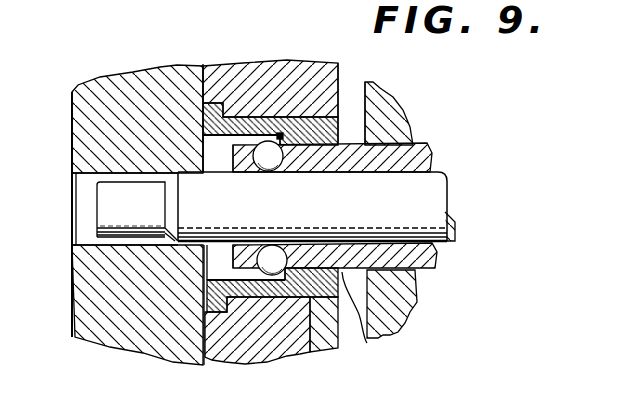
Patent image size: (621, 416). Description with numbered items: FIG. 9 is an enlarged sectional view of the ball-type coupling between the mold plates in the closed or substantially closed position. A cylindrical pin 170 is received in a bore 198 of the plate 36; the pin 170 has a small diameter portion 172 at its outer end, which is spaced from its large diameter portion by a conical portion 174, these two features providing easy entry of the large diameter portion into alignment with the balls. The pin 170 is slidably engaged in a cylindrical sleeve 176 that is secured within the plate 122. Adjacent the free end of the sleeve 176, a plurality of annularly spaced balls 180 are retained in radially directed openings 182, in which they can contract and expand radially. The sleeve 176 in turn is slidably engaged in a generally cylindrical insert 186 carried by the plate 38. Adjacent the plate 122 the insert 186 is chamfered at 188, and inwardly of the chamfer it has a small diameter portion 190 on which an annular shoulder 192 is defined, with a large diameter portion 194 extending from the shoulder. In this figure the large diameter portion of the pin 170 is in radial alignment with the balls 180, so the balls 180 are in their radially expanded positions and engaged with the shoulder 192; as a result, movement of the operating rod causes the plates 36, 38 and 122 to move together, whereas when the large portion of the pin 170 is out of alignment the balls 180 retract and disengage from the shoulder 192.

The plate 36 is at (155, 75).
The plate 38 is at (338, 77).
The plate 122 is at (402, 302).
The cylindrical pin 170 is at (316, 206).
The small diameter portion 172 is at (108, 193).
The conical portion 174 is at (175, 182).
The cylindrical sleeve 176 is at (388, 157).
The ball 180 is at (266, 153).
The radially directed opening 182 is at (262, 252).
The cylindrical insert 186 is at (245, 297).
The chamfer 188 is at (367, 343).
The small diameter portion 190 is at (313, 347).
The annular shoulder 192 is at (277, 135).
The large diameter portion 194 is at (236, 128).
The bore 198 is at (80, 246).